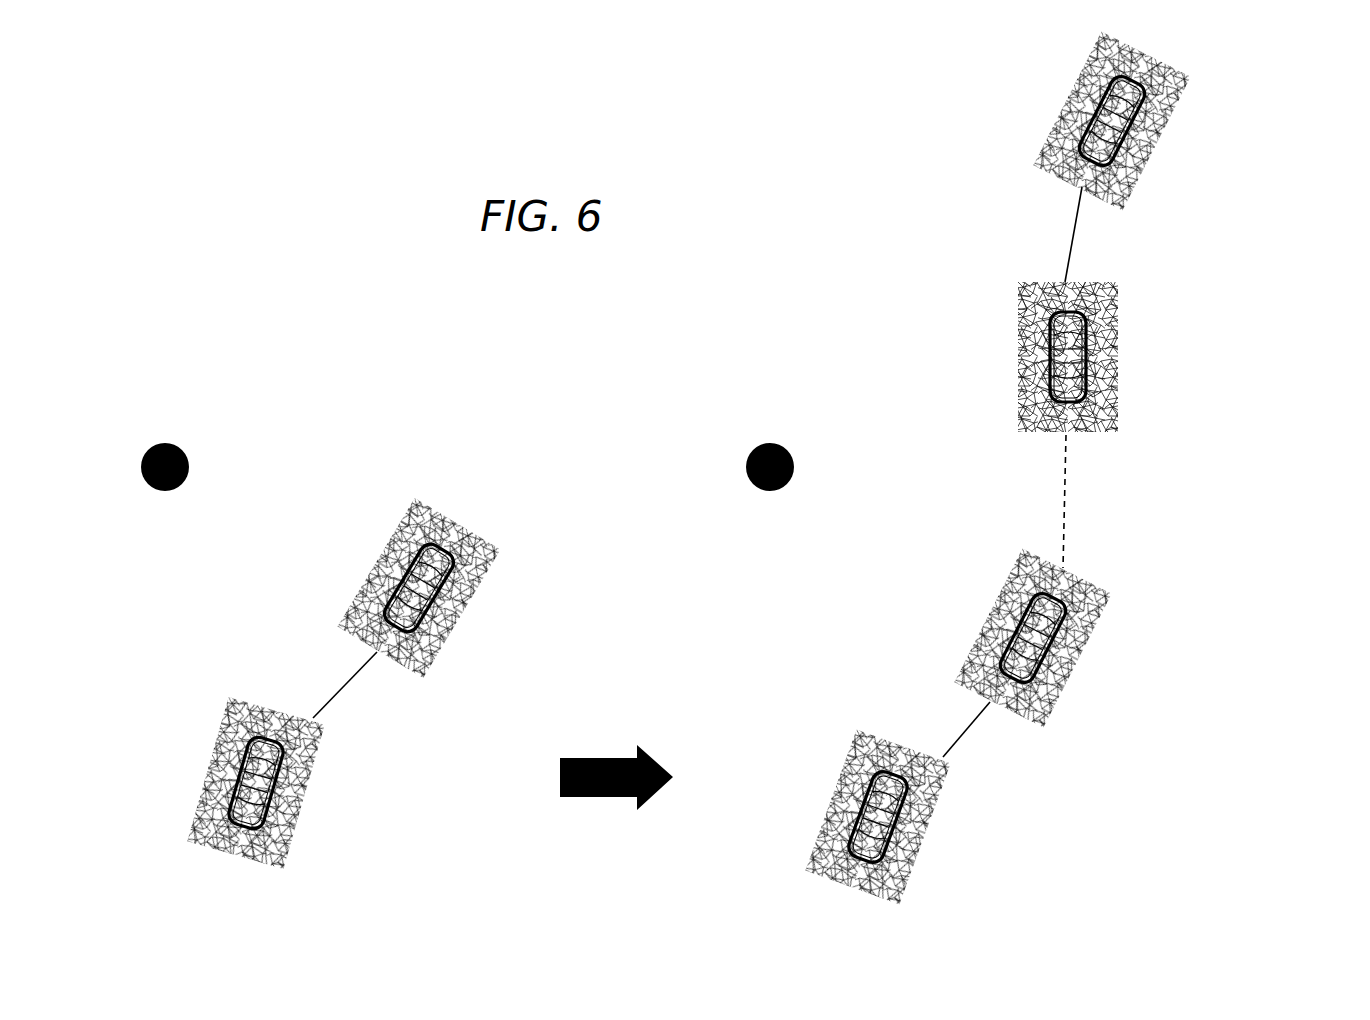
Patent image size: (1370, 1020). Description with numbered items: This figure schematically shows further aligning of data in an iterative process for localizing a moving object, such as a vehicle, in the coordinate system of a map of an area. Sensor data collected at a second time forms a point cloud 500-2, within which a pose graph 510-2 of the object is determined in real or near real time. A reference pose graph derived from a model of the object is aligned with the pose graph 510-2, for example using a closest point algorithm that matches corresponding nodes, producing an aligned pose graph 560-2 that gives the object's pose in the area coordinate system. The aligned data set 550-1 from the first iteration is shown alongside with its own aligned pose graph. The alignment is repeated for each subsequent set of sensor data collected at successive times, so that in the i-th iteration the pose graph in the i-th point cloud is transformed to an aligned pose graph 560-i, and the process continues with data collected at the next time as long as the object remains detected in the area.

The point cloud data 500-2 is at (460, 512).
The pose graph 510-2 is at (452, 578).
The aligned data set 550-1 is at (252, 693).
The aligned pose graph 560-2 is at (1068, 615).
The aligned pose graph 560-i is at (1087, 338).